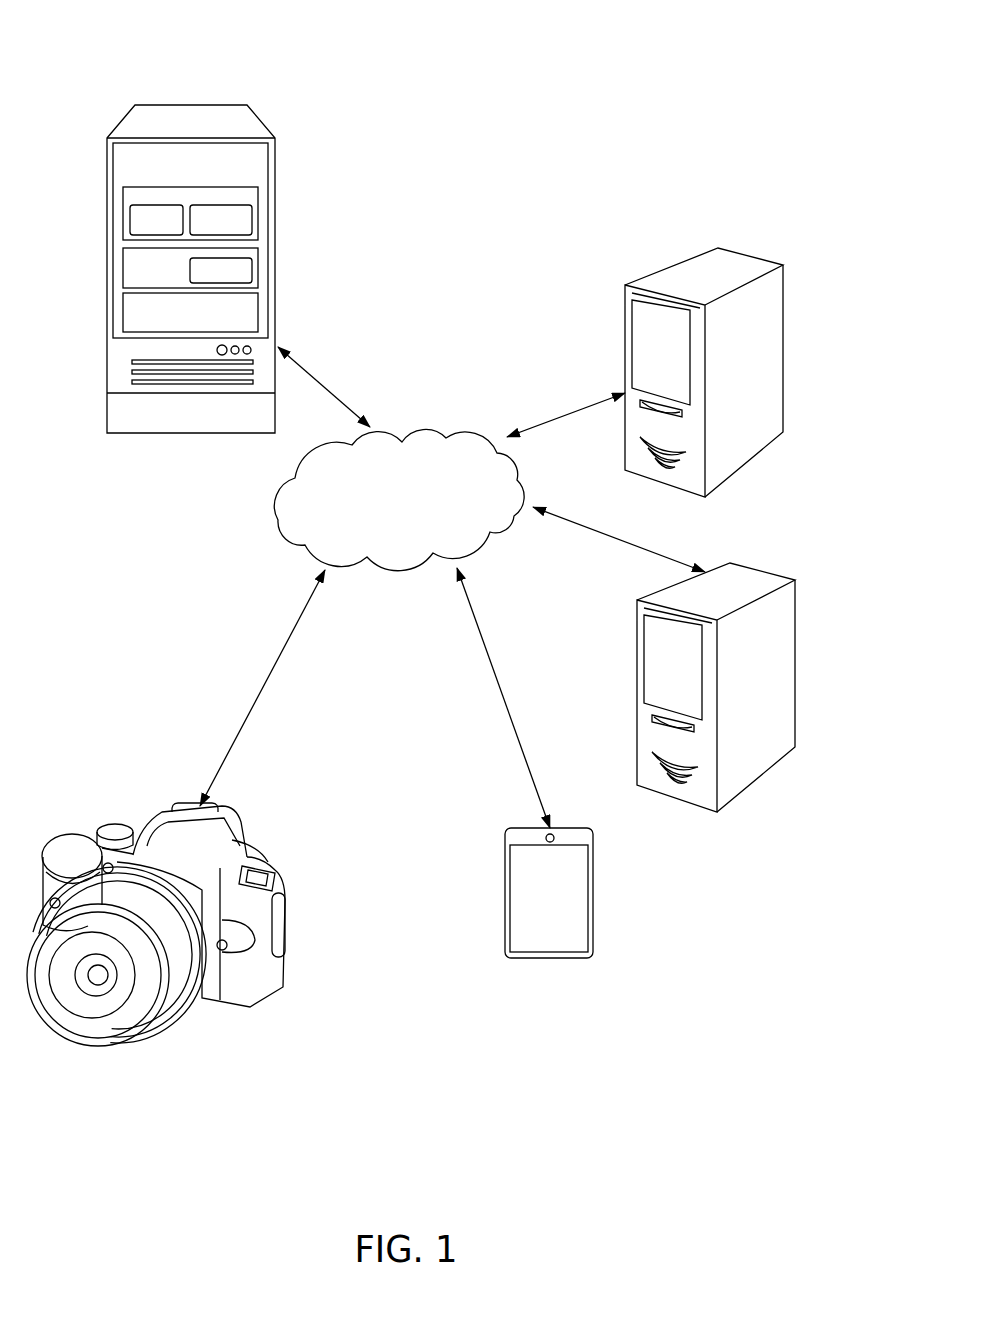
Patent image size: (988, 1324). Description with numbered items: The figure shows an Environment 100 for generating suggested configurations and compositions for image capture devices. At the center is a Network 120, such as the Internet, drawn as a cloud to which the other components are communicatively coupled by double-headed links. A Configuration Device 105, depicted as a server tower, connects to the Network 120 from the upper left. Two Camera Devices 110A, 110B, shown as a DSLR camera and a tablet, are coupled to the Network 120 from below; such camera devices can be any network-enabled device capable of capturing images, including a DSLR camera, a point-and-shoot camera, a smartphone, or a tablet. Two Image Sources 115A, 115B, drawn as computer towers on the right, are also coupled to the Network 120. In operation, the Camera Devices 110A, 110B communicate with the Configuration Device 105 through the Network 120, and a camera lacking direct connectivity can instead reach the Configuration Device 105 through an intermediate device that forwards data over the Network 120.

The environment 100 is at (141, 60).
The configuration device 105 is at (258, 120).
The camera device 110A is at (280, 883).
The camera device 110B is at (593, 878).
The image source 115A is at (752, 318).
The image source 115B is at (765, 635).
The network 120 is at (380, 532).